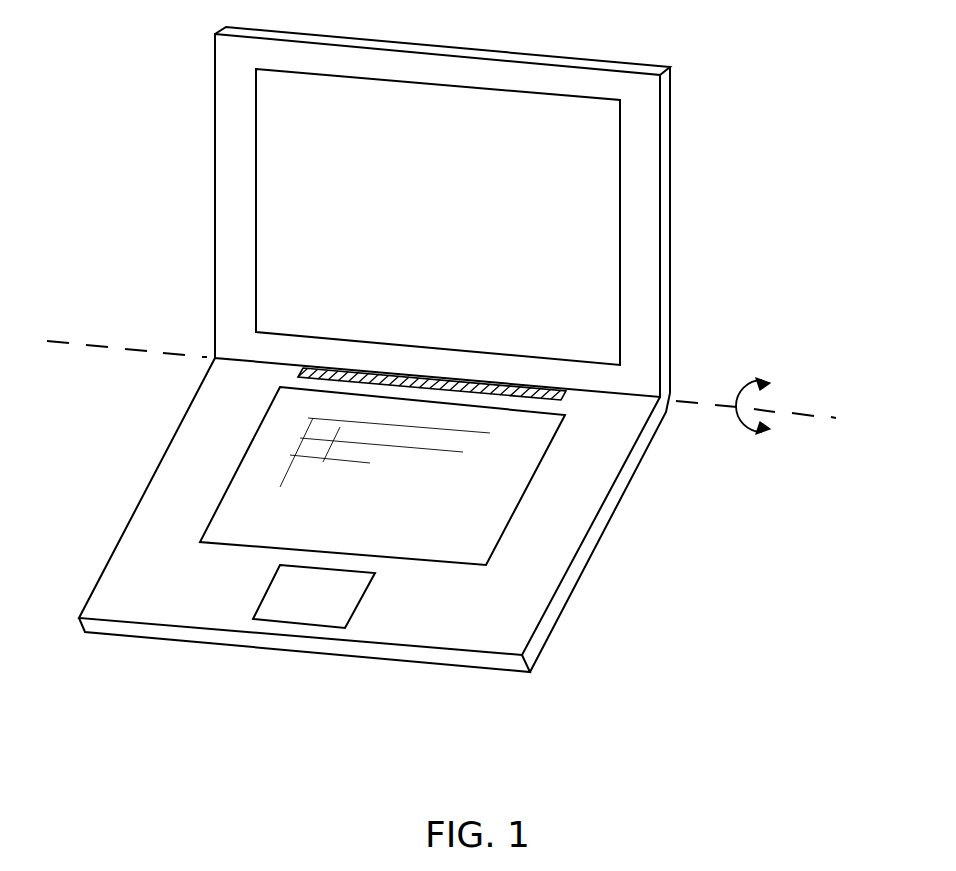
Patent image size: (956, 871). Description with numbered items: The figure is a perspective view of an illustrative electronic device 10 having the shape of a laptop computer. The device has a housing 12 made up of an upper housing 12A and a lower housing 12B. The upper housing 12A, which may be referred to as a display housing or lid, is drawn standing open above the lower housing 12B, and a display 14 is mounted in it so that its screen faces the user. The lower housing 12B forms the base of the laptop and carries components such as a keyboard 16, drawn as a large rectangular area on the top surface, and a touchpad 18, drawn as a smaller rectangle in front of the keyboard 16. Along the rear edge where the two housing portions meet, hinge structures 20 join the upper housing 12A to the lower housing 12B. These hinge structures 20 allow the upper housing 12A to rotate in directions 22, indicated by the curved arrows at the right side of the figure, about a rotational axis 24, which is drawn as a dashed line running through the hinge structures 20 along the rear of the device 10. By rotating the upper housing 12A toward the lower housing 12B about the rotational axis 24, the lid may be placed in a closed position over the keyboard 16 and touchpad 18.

The electronic device 10 is at (744, 66).
The housing 12 is at (672, 332).
The upper housing 12A is at (203, 349).
The lower housing 12B is at (195, 366).
The display 14 is at (582, 204).
The keyboard 16 is at (523, 493).
The touchpad 18 is at (358, 605).
The hinge structures 20 is at (535, 379).
The directions 22 is at (740, 440).
The rotational axis 24 is at (93, 345).